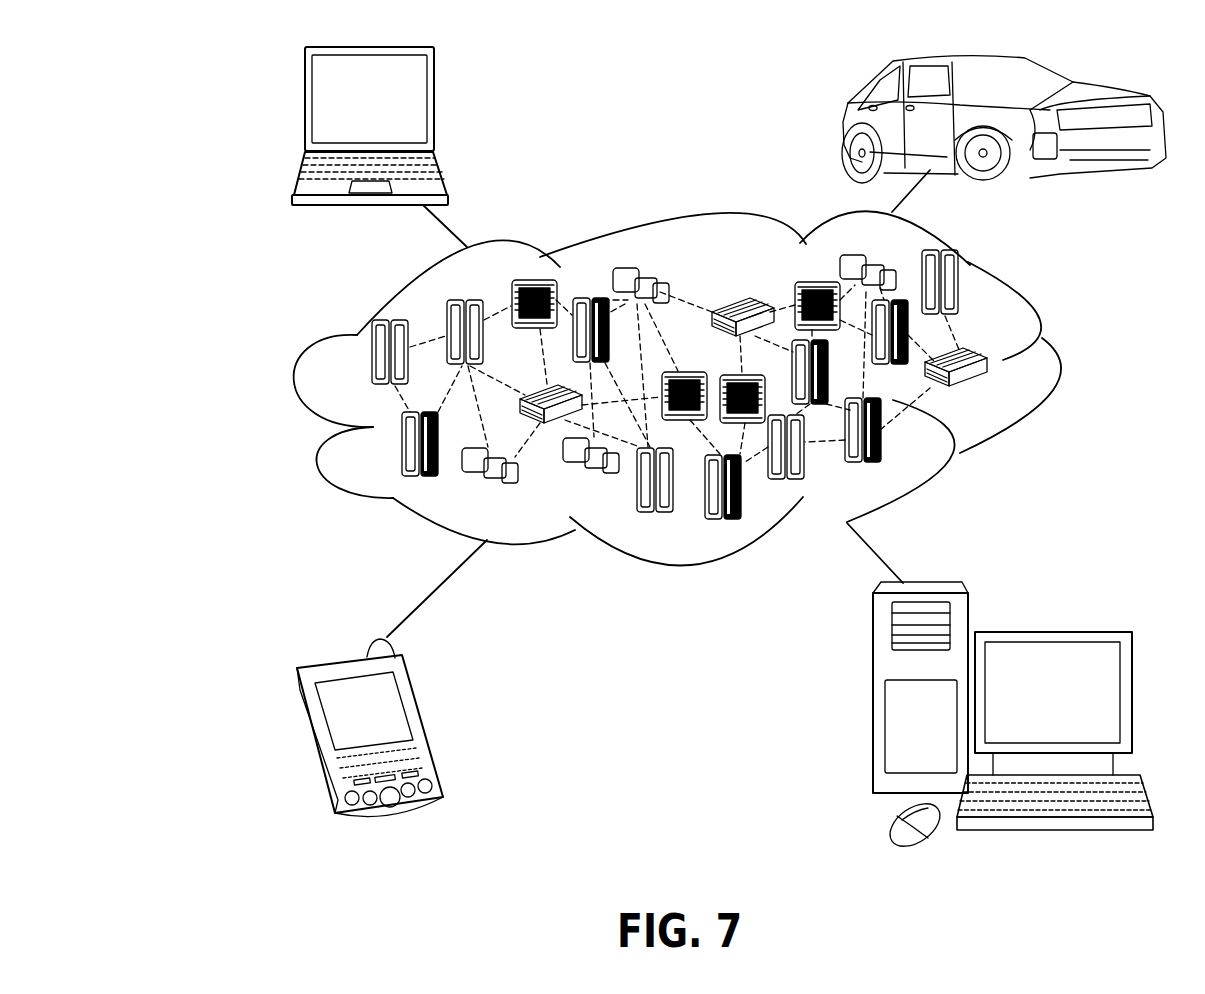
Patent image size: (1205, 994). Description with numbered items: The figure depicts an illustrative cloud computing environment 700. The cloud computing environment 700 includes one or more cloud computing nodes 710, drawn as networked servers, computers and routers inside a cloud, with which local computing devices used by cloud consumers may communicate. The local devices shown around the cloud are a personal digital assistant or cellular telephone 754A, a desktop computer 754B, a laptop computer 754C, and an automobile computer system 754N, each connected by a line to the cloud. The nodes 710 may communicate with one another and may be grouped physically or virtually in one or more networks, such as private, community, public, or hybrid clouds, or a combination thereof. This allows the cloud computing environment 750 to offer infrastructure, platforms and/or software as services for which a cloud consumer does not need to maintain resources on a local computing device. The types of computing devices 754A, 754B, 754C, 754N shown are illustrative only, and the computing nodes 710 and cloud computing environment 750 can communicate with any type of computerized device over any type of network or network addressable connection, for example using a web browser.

The cloud computing environment 700 is at (146, 76).
The cloud computing environment 750 is at (1049, 362).
The cloud computing nodes 710 is at (1003, 396).
The personal digital assistant or cellular telephone 754A is at (426, 720).
The desktop computer 754B is at (1050, 632).
The laptop computer 754C is at (436, 108).
The automobile computer system 754N is at (843, 124).